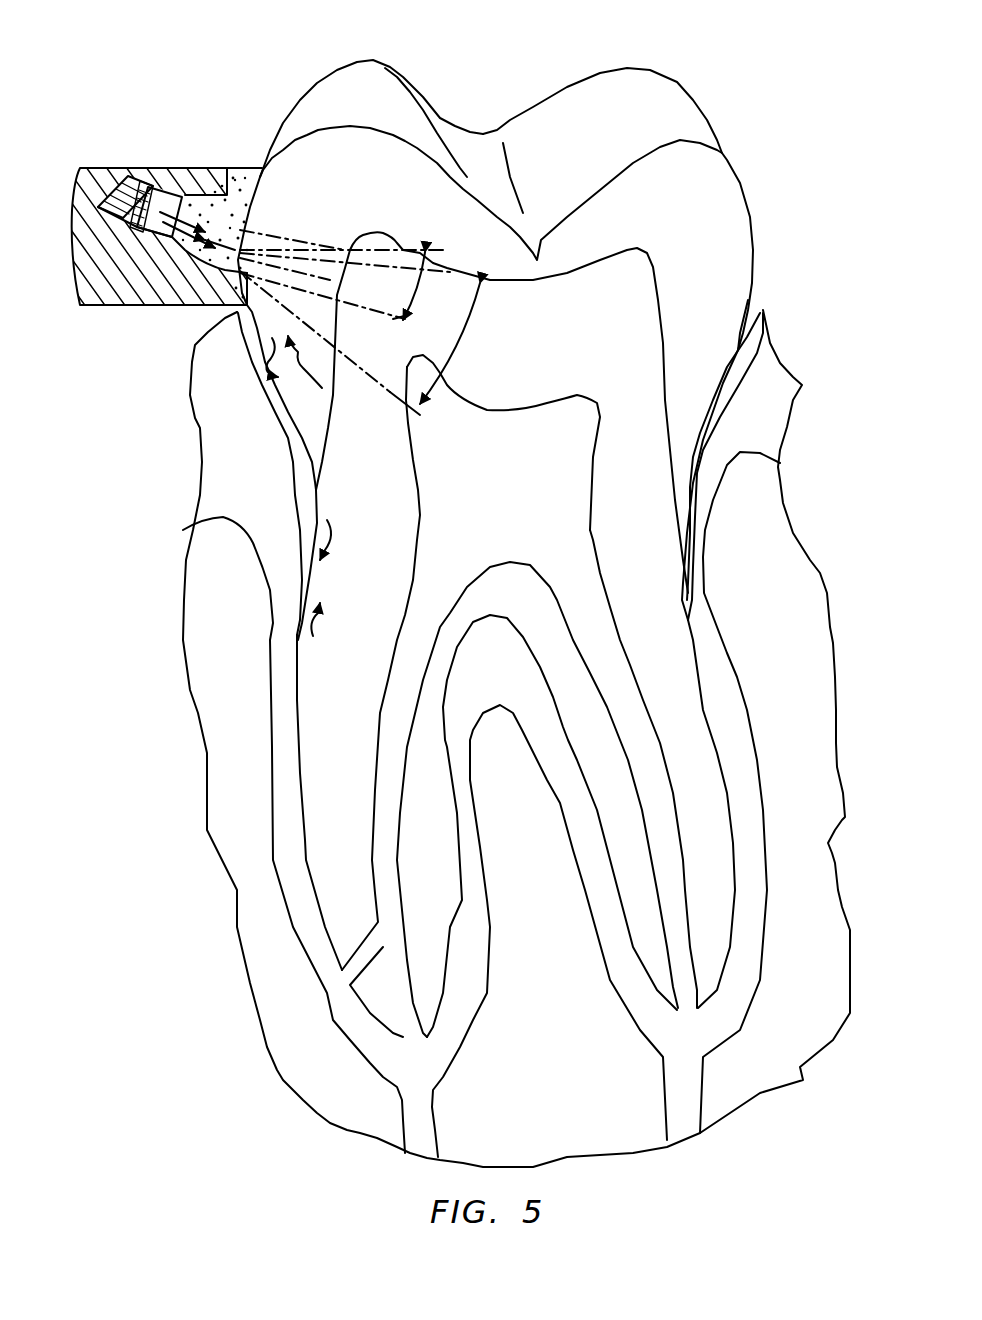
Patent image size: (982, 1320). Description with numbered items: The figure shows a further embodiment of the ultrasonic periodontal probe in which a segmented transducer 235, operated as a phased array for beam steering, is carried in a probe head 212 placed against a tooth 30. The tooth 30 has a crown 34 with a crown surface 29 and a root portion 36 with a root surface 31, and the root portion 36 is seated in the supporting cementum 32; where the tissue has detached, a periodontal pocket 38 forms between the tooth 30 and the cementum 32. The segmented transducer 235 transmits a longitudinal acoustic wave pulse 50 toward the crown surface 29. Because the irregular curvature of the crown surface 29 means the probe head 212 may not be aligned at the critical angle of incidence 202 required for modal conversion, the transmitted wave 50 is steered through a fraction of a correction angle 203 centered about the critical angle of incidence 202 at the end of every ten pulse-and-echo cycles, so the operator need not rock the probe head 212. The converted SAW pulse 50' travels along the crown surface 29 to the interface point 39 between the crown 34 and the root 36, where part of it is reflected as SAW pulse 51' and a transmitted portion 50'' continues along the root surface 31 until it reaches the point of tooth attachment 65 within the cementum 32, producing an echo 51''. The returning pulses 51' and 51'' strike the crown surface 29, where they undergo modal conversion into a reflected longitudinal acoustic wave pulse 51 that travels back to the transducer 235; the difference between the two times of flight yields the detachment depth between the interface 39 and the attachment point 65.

The probe head 212 is at (102, 163).
The segmented transducer 235 is at (150, 176).
The longitudinal acoustic wave pulse 50 is at (192, 208).
The reflected longitudinal acoustic wave pulse 51 is at (291, 291).
The crown surface 29 is at (380, 70).
The crown 34 is at (675, 70).
The tooth 30 is at (775, 257).
The critical angle of incidence 202 is at (440, 306).
The correction angle 203 is at (467, 351).
The SAW pulse 50' is at (267, 374).
The reflected SAW pulse 51' is at (330, 370).
The interface point between crown and root 39 is at (317, 483).
The periodontal pocket 38 is at (303, 520).
The transmission portion of SAW pulse 50'' is at (356, 540).
The root surface 31 is at (303, 580).
The echo of SAW pulse 51'' is at (347, 626).
The point of tooth attachment 65 is at (268, 645).
The cementum 32 is at (287, 747).
The root portion 36 is at (680, 650).